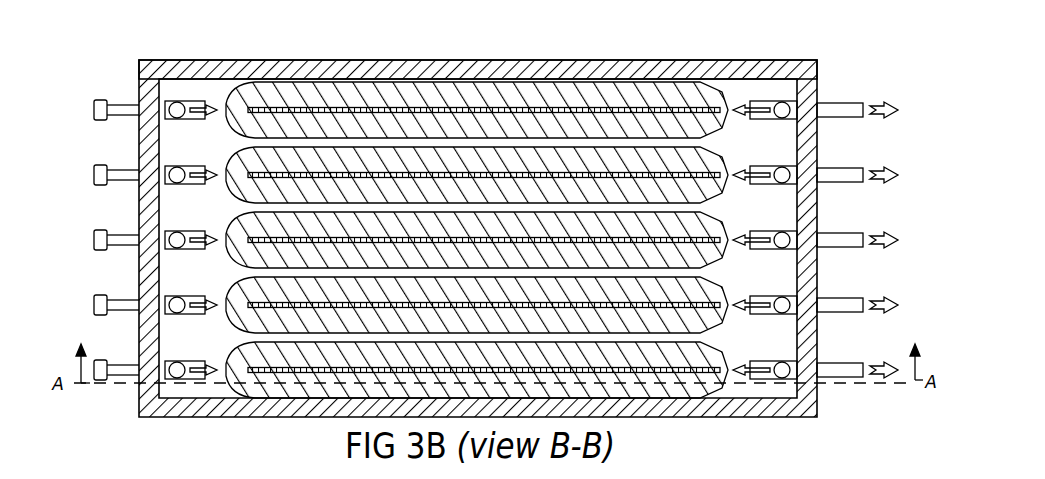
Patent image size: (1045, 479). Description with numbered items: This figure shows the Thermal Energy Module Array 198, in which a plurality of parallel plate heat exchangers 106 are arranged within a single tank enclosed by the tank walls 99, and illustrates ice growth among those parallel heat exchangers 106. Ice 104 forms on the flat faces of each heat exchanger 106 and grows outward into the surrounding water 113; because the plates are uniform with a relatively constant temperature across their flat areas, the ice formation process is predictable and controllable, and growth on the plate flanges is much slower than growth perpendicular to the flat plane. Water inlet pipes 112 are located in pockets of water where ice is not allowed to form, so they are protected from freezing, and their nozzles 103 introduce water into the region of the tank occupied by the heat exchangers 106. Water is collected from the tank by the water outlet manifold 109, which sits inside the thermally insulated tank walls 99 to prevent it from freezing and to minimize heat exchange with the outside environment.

The tank walls 99 is at (797, 417).
The Thermal Energy Module Array 198 is at (737, 52).
The water inlet pipes 112 is at (178, 102).
The nozzles 103 is at (213, 107).
The heat exchanger 106 is at (442, 108).
The water 113 is at (786, 92).
The water outlet manifold 109 is at (845, 107).
The ice 104 is at (265, 390).